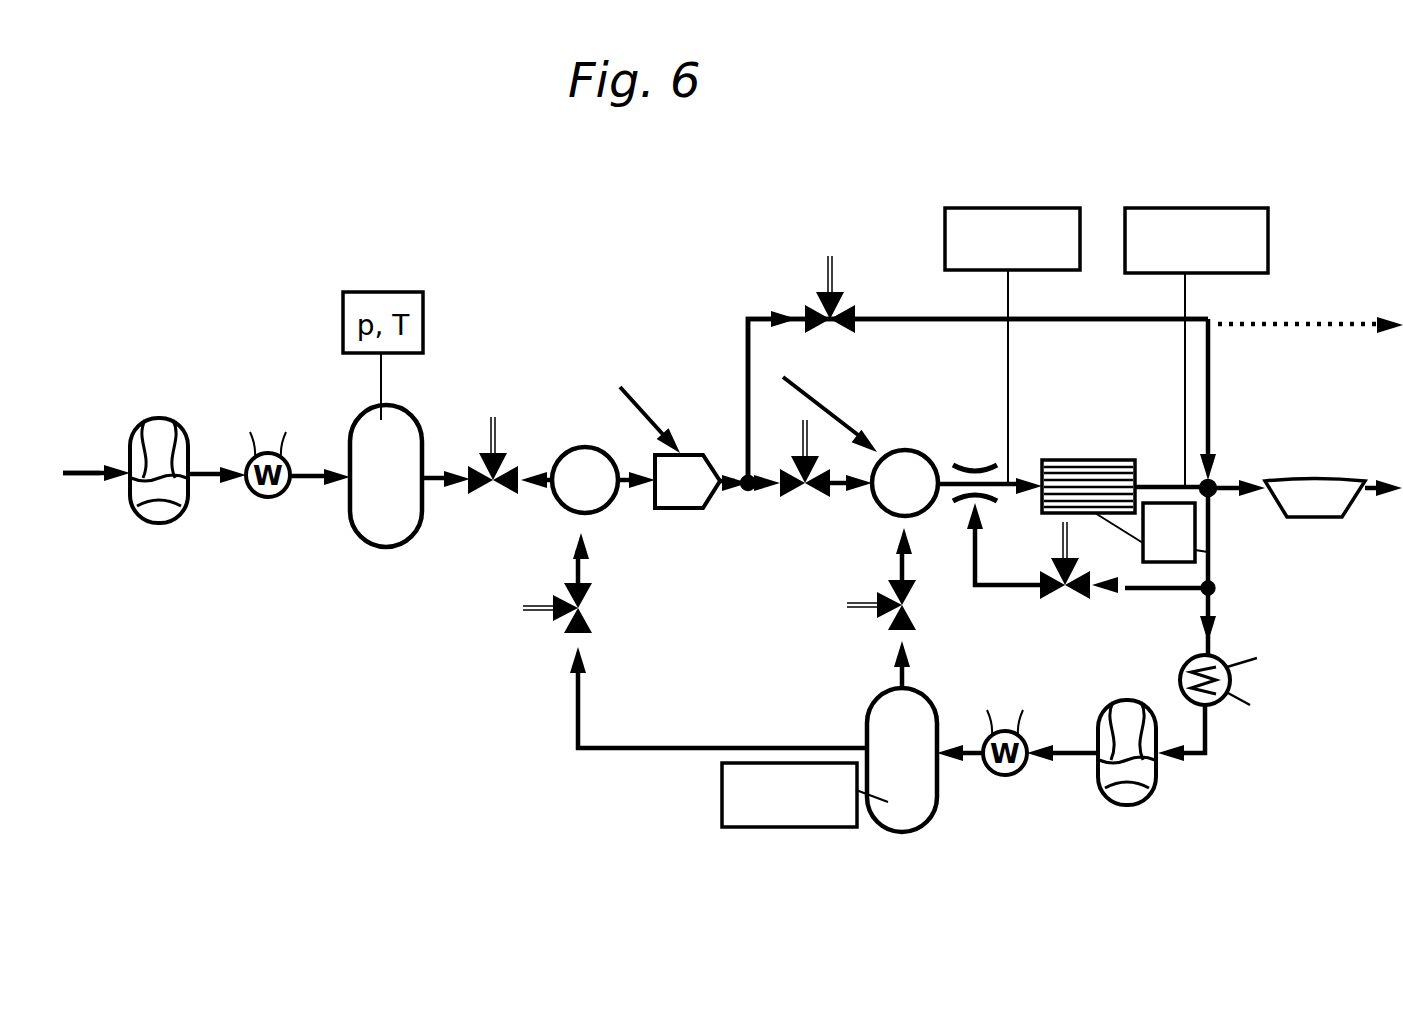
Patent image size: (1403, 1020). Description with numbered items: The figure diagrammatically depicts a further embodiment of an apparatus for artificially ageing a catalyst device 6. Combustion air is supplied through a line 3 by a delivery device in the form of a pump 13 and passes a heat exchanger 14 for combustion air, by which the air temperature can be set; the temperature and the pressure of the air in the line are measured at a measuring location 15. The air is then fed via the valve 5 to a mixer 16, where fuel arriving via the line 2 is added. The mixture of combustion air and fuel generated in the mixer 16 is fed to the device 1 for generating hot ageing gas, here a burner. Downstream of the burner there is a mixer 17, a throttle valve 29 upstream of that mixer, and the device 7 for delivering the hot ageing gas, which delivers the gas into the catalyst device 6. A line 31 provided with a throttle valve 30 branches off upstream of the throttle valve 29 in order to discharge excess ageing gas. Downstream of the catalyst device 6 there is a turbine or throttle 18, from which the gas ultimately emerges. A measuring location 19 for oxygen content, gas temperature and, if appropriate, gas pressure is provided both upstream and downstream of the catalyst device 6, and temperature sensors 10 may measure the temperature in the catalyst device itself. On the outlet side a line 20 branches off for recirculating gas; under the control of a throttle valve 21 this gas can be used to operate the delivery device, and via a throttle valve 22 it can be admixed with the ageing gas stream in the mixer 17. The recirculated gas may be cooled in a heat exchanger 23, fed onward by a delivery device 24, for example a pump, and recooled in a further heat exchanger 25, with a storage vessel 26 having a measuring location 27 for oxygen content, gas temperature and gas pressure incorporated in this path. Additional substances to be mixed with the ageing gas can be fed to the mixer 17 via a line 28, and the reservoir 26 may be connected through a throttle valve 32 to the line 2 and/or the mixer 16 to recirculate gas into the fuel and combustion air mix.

The device for generating hot ageing gas 1 is at (683, 500).
The line 2 is at (622, 388).
The line 3 is at (87, 478).
The valve 5 is at (493, 500).
The catalyst device 6 is at (1090, 460).
The device for delivering the hot ageing gas 7 is at (977, 462).
The temperature sensors 10 is at (1210, 552).
The pump 13 is at (160, 524).
The heat exchanger 14 is at (263, 498).
The measuring location 15 is at (377, 547).
The mixer 16 is at (576, 449).
The mixer 17 is at (912, 450).
The turbine or throttle 18 is at (1298, 478).
The measuring location 19 is at (1135, 208).
The line 20 is at (1212, 568).
The throttle valve 21 is at (1063, 600).
The throttle valve 22 is at (912, 617).
The heat exchanger 23 is at (1218, 702).
The delivery device 24 is at (1130, 805).
The heat exchanger 25 is at (1008, 775).
The storage vessel 26 is at (938, 815).
The measuring location 27 is at (722, 812).
The line 28 is at (830, 410).
The throttle valve 29 is at (797, 500).
The throttle valve 30 is at (842, 308).
The line 31 is at (893, 323).
The throttle valve 32 is at (588, 617).